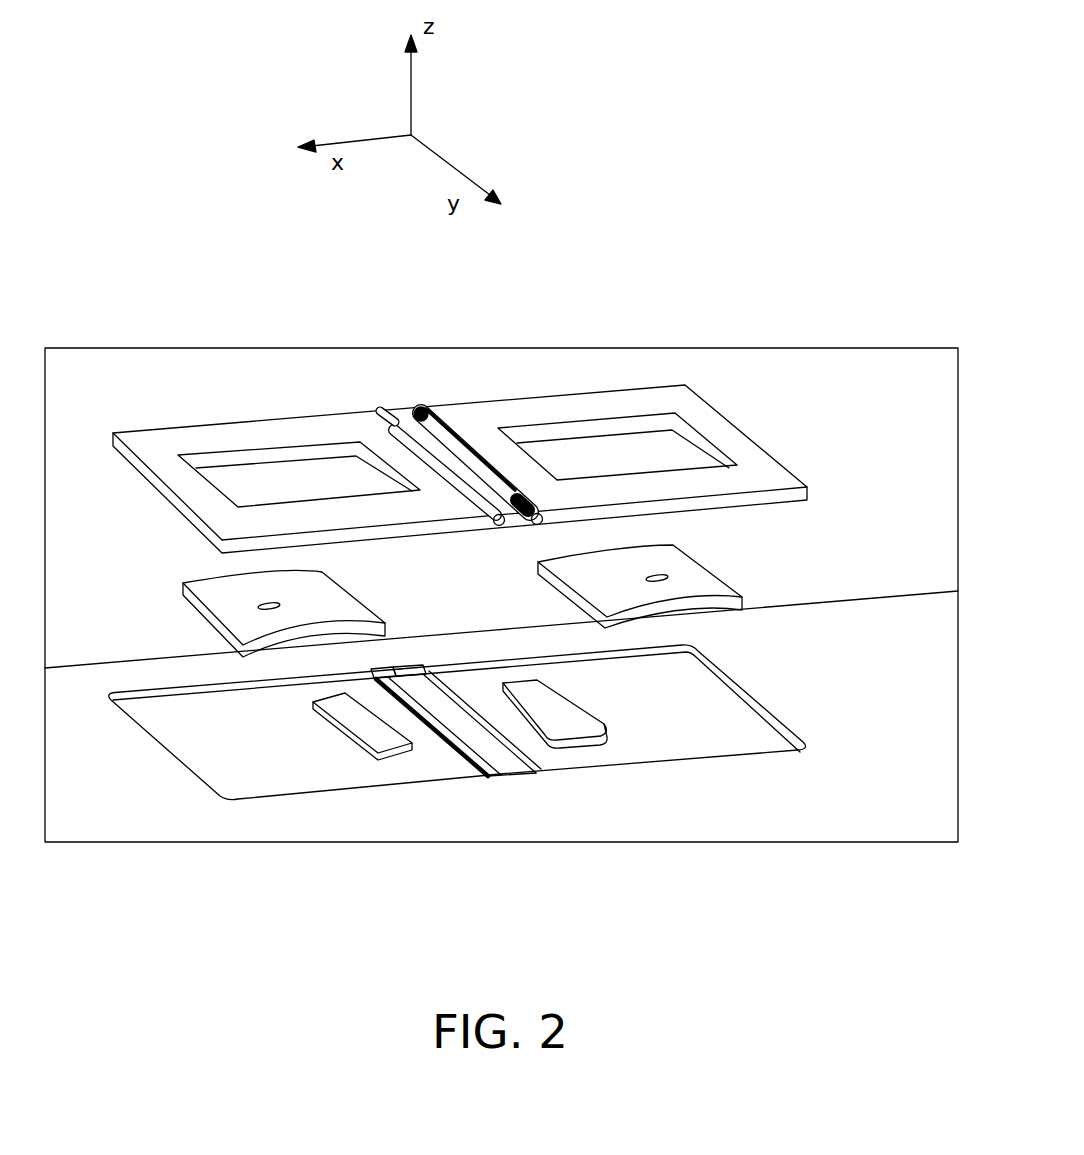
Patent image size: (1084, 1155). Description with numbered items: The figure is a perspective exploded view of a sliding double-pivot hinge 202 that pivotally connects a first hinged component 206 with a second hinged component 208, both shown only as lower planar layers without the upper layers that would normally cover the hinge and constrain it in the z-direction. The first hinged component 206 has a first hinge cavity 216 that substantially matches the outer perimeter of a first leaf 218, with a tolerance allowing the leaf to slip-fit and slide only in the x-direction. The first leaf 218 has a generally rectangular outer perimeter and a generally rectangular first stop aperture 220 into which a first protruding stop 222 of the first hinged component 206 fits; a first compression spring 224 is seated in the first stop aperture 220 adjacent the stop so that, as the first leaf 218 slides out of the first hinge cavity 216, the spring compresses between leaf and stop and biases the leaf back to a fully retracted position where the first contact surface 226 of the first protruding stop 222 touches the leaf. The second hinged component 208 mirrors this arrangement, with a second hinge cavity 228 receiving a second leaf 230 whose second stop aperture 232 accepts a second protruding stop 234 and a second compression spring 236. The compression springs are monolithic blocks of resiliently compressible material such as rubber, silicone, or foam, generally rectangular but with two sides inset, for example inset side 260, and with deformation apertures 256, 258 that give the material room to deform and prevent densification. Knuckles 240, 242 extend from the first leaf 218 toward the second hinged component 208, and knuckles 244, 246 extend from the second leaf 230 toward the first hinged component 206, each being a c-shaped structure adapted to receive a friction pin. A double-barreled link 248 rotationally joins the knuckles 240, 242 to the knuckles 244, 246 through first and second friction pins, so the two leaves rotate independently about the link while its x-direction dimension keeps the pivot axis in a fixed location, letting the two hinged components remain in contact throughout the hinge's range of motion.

The sliding double-pivot hinge 202 is at (176, 316).
The first hinged component 206 is at (897, 689).
The second hinged component 208 is at (144, 789).
The first hinge cavity 216 is at (694, 724).
The first leaf 218 is at (477, 410).
The first stop aperture 220 is at (642, 463).
The first protruding stop 222 is at (565, 718).
The first compression spring 224 is at (720, 540).
The first contact surface 226 is at (530, 718).
The second hinge cavity 228 is at (267, 754).
The second leaf 230 is at (207, 440).
The second stop aperture 232 is at (325, 491).
The second protruding stop 234 is at (385, 740).
The second compression spring 236 is at (252, 714).
The knuckle 240 is at (543, 490).
The knuckle 242 is at (410, 418).
The knuckle 244 is at (513, 500).
The knuckle 246 is at (394, 424).
The double-barreled link 248 is at (467, 467).
The deformation aperture 256 is at (658, 578).
The deformation aperture 258 is at (262, 604).
The inset side 260 is at (335, 614).